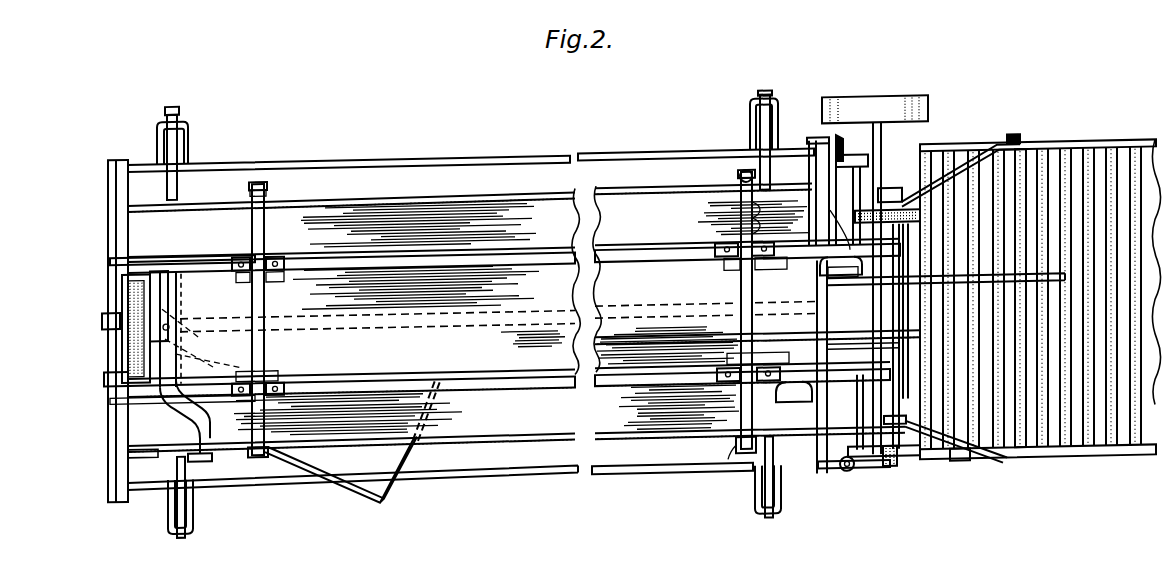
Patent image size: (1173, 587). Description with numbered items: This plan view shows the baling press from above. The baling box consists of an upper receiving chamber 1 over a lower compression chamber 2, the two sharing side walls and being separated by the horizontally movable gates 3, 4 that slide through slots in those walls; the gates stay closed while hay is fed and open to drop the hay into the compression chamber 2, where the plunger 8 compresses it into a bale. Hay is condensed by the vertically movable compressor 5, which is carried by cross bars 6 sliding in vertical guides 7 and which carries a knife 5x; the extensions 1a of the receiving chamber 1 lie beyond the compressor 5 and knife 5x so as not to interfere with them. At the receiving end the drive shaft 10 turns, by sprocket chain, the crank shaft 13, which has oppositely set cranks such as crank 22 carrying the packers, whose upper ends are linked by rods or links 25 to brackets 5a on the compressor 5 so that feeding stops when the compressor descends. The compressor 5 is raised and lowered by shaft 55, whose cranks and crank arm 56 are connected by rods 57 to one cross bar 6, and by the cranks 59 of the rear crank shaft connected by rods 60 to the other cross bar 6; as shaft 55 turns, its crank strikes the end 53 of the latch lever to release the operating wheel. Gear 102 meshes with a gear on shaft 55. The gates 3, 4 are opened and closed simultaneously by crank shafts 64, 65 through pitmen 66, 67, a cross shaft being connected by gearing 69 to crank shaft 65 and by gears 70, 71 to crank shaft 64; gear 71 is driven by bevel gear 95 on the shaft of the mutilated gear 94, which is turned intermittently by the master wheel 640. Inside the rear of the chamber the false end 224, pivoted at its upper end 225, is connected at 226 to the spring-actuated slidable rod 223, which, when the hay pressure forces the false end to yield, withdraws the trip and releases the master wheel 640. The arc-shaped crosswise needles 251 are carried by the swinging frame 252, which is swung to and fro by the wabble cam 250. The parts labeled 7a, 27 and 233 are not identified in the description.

The receiving chamber 1 is at (1140, 330).
The extensions of the receiving chamber 1a is at (905, 251).
The compression chamber 2 is at (948, 280).
The gate 3 is at (506, 203).
The gate 4 is at (524, 451).
The compressor 5 is at (377, 337).
The brackets 5a is at (770, 281).
The knife 5x is at (815, 305).
The cross bars 6 is at (265, 343).
The vertical guides 7 is at (266, 256).
The rail clamp 7a is at (775, 249).
The plunger 8 is at (182, 282).
The drive shaft 10 is at (880, 141).
The crank shaft 13 is at (948, 315).
The crank 22 is at (812, 327).
The rod or link 25 is at (760, 231).
The pipe 27 is at (886, 194).
The end of the rod or lever 53 is at (812, 440).
The shaft 55 is at (744, 455).
The crank arm 56 is at (741, 176).
The rods 57 is at (740, 180).
The cranks 59 is at (264, 182).
The rods 60 is at (292, 191).
The crank shaft 64 is at (480, 476).
The crank shaft 65 is at (436, 155).
The connecting rod or pitman 66 is at (172, 479).
The connecting rod or pitman 67 is at (180, 177).
The gearing 69 is at (826, 165).
The gear 70 is at (890, 474).
The gear 71 is at (843, 478).
The mutilated gear 94 is at (915, 472).
The bevel gear 95 is at (860, 476).
The gear 102 is at (735, 478).
The longitudinally slidable rod 223 is at (110, 369).
The pressure member or false end 224 is at (146, 262).
The upper end pivot of the pressure member 225 is at (118, 283).
The connection of rod to pressure member 226 is at (106, 308).
The tube 233 is at (183, 328).
The wabble cam 250 is at (140, 439).
The crosswise operating needles 251 is at (408, 452).
The swinging frame 252 is at (193, 421).
The master wheel 640 is at (930, 475).